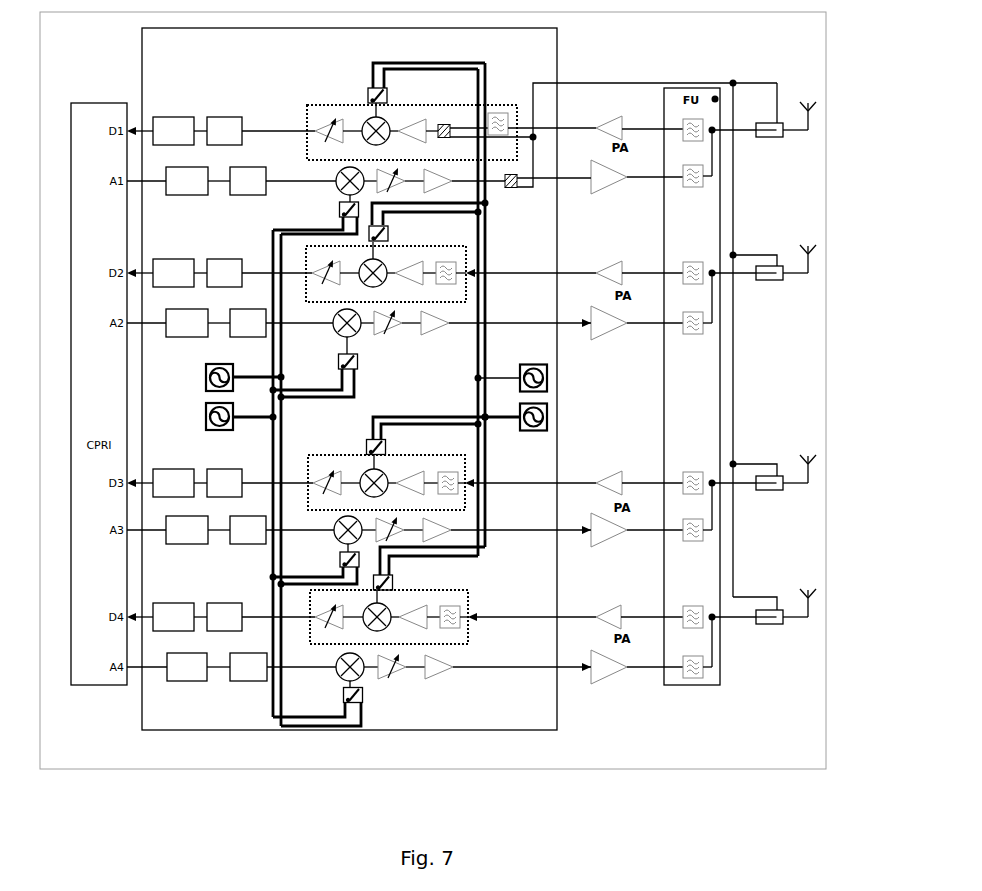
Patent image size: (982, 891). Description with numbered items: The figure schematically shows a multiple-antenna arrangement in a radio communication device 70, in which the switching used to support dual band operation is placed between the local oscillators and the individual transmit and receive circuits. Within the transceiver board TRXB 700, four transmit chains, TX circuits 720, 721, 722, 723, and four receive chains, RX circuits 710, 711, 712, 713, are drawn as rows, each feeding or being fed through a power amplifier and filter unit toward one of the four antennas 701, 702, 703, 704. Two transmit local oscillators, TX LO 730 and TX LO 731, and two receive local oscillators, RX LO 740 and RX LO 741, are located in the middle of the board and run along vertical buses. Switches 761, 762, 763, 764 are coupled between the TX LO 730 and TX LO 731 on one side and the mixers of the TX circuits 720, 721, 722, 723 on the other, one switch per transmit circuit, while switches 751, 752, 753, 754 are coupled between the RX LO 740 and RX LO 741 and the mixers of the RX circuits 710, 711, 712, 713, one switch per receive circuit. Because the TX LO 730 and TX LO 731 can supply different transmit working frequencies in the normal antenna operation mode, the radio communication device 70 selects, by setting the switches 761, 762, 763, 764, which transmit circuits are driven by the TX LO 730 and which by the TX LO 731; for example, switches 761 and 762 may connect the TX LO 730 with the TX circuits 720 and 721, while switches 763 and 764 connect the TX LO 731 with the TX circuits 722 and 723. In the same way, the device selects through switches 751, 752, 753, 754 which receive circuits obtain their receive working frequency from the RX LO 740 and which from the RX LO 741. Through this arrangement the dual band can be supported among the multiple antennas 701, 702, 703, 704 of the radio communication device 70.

The radio communication device 70 is at (433, 390).
The TRXB 700 is at (349, 379).
The antenna 701 is at (770, 121).
The antenna 702 is at (770, 283).
The antenna 703 is at (767, 484).
The antenna 704 is at (767, 623).
The RX circuit 710 is at (361, 116).
The RX circuit 711 is at (361, 269).
The RX circuit 712 is at (361, 476).
The RX circuit 713 is at (361, 610).
The TX circuit 720 is at (359, 185).
The TX circuit 721 is at (359, 331).
The TX circuit 722 is at (359, 539).
The TX circuit 723 is at (359, 674).
The TX LO 730 is at (243, 371).
The TX LO 731 is at (239, 426).
The RX LO 740 is at (512, 369).
The RX LO 741 is at (516, 428).
The switch 751 is at (408, 111).
The switch 752 is at (397, 251).
The switch 753 is at (398, 462).
The switch 754 is at (397, 595).
The switch 761 is at (316, 214).
The switch 762 is at (314, 369).
The switch 763 is at (315, 566).
The switch 764 is at (318, 703).